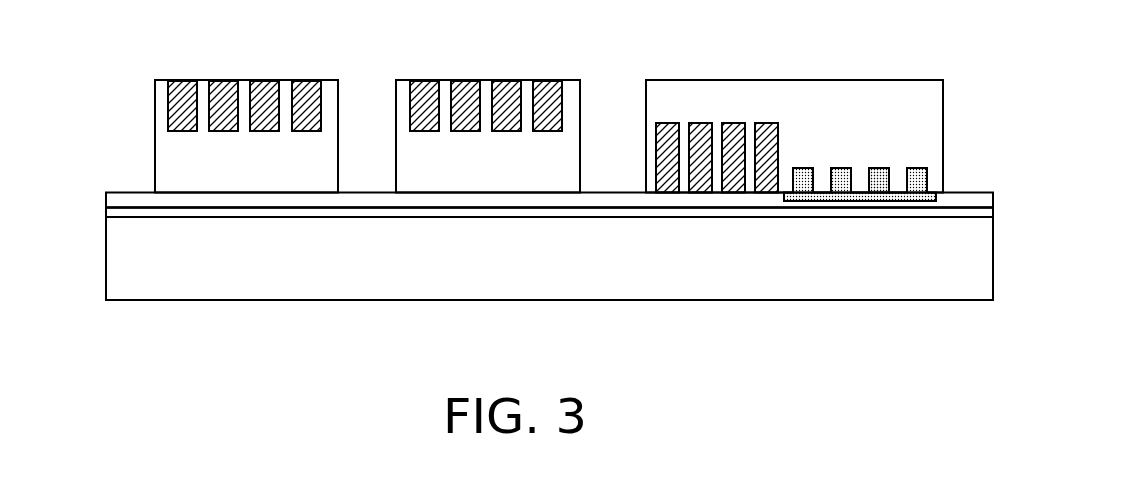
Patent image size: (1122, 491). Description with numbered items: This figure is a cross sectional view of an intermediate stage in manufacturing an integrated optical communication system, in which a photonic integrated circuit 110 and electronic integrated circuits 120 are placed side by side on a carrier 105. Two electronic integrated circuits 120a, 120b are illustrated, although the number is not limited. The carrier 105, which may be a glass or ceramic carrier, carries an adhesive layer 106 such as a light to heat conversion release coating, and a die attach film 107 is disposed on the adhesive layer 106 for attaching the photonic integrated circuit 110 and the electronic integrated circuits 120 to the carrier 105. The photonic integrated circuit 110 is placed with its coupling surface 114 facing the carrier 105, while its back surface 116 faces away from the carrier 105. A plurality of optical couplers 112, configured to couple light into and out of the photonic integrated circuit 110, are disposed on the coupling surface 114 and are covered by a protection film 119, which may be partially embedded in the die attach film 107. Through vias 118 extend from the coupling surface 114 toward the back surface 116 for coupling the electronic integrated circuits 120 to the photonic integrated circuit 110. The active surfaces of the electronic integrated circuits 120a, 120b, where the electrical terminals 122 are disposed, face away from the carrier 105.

The carrier 105 is at (987, 280).
The adhesive layer 106 is at (987, 213).
The die attach film 107 is at (987, 200).
The photonic integrated circuit 110 is at (903, 88).
The optical couplers 112 is at (925, 185).
The coupling surface 114 is at (719, 194).
The back surface 116 is at (847, 79).
The through vias 118 is at (733, 123).
The protection film 119 is at (880, 175).
The electronic integrated circuit 120 is at (406, 96).
The electronic integrated circuit 120a is at (330, 105).
The electronic integrated circuit 120b is at (572, 105).
The electrical terminals 122 is at (267, 81).